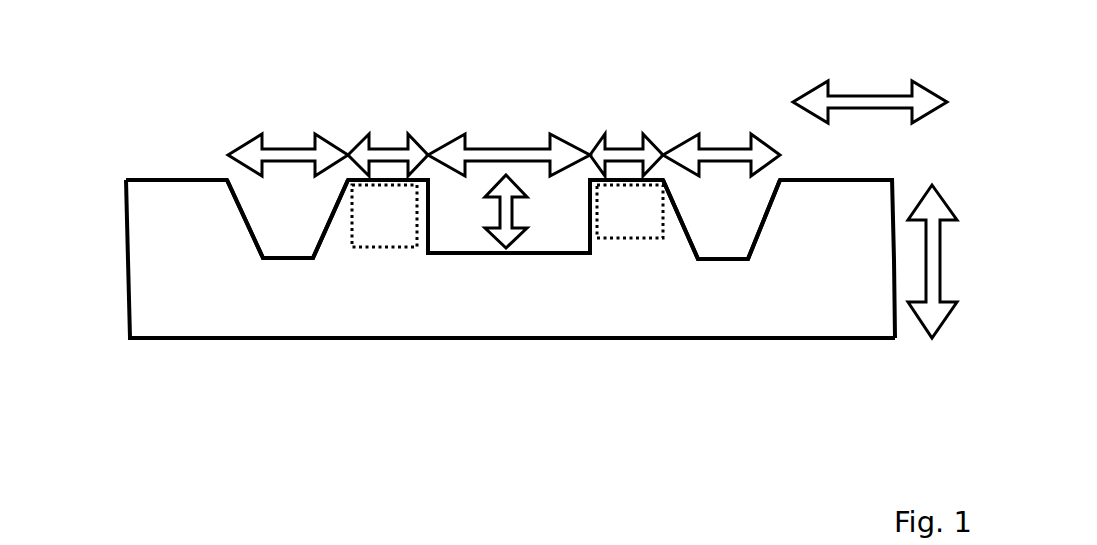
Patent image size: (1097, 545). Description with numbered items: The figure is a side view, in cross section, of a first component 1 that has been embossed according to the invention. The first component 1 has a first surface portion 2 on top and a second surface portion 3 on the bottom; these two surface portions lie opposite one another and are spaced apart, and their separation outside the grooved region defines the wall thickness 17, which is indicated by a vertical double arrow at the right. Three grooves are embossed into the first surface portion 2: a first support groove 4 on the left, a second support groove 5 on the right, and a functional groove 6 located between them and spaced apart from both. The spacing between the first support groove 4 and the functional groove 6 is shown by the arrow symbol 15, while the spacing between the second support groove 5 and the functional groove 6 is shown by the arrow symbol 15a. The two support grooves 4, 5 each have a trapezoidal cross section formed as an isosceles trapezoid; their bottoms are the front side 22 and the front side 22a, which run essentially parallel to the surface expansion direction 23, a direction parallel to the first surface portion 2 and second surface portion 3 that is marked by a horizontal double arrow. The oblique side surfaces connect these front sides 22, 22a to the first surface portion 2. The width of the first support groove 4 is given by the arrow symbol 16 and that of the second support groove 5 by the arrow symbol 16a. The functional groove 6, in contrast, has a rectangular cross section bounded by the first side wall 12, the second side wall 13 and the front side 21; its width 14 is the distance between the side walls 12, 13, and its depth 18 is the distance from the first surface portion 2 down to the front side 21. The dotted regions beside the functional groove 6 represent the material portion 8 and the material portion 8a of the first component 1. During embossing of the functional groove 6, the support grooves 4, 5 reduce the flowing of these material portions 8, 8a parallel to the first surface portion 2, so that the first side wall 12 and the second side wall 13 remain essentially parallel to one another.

The first component 1 is at (98, 35).
The first surface portion 2 is at (157, 176).
The second surface portion 3 is at (205, 365).
The first support groove 4 is at (272, 285).
The second support groove 5 is at (743, 287).
The functional groove 6 is at (502, 290).
The material portion 8 is at (385, 212).
The material portion 8a is at (631, 213).
The first side wall 12 is at (433, 212).
The second side wall 13 is at (583, 212).
The width of the functional groove 14 is at (556, 157).
The arrow symbol 15 is at (415, 155).
The arrow symbol 15a is at (650, 153).
The arrow symbol 16 is at (322, 155).
The arrow symbol 16a is at (758, 162).
The wall thickness 17 is at (933, 312).
The depth of the functional groove 18 is at (507, 230).
The front side 21 is at (473, 258).
The front side 22 is at (291, 262).
The front side 22a is at (724, 267).
The surface expansion direction 23 is at (885, 100).